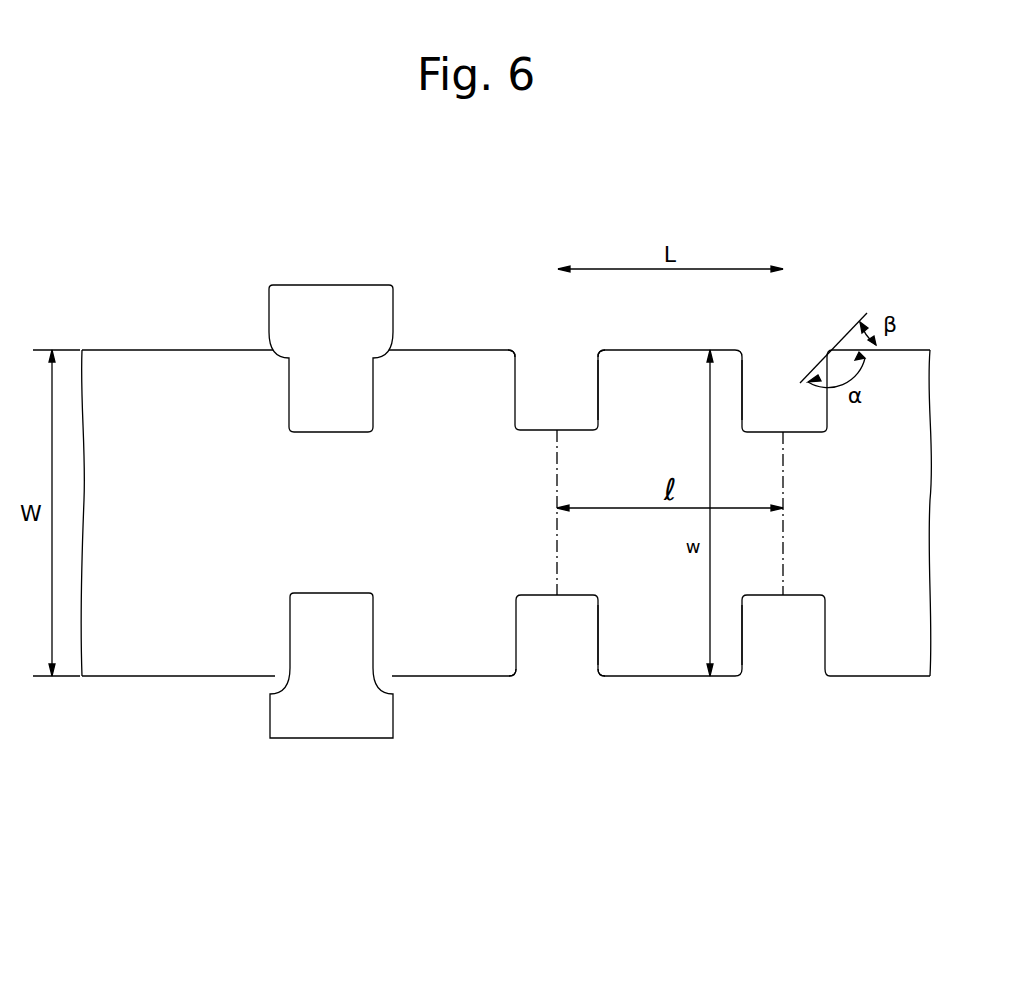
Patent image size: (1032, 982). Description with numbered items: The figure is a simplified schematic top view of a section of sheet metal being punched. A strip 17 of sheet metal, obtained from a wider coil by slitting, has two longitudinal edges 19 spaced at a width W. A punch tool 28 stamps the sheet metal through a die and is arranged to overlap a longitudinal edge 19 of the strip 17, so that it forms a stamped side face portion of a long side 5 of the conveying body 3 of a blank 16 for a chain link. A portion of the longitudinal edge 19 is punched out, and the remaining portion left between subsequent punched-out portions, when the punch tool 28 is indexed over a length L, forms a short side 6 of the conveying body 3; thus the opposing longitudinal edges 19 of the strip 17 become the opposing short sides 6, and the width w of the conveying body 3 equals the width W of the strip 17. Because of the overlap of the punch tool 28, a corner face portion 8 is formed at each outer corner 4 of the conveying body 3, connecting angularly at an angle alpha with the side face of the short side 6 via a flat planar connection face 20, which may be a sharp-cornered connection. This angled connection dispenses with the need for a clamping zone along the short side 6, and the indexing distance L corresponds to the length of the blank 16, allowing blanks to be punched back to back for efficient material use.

The conveying body 3 is at (437, 620).
The outer corner 4 is at (607, 356).
The long side 5 is at (595, 378).
The short side 6 is at (670, 349).
The corner face portion 8 is at (512, 346).
The blank 16 is at (608, 475).
The strip 17 is at (126, 648).
The longitudinal edge 19 is at (147, 350).
The flat planar connection face 20 is at (600, 351).
The punch tool 28 is at (322, 322).